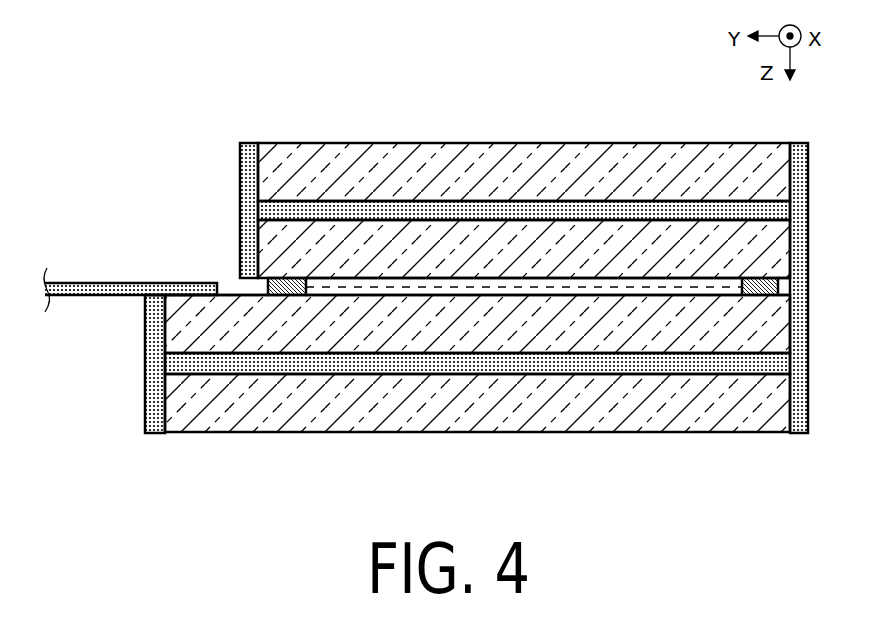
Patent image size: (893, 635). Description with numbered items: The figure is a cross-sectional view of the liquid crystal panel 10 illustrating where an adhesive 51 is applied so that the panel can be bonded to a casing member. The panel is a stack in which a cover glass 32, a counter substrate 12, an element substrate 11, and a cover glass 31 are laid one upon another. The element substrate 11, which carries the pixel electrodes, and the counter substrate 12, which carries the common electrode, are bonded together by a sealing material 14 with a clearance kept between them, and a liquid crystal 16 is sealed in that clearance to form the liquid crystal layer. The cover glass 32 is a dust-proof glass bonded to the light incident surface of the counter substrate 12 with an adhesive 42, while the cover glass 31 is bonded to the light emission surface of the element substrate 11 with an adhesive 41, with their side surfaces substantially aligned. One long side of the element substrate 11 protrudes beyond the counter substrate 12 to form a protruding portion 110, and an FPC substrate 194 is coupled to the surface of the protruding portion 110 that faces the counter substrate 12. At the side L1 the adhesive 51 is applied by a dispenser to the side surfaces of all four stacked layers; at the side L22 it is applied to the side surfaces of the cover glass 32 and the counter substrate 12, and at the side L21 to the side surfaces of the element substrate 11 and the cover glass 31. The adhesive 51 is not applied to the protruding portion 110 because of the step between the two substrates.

The liquid crystal panel 10 is at (124, 50).
The element substrate 11 is at (180, 318).
The counter substrate 12 is at (275, 240).
The sealing material 14 is at (780, 287).
The liquid crystal 16 is at (563, 290).
The cover glass 31 is at (500, 417).
The cover glass 32 is at (497, 152).
The adhesive 41 is at (770, 361).
The adhesive 42 is at (770, 209).
The adhesive 51 is at (249, 184).
The protruding portion 110 is at (230, 293).
The FPC substrate 194 is at (62, 283).
The side L1 is at (802, 273).
The side L21 is at (131, 364).
The side L22 is at (235, 197).